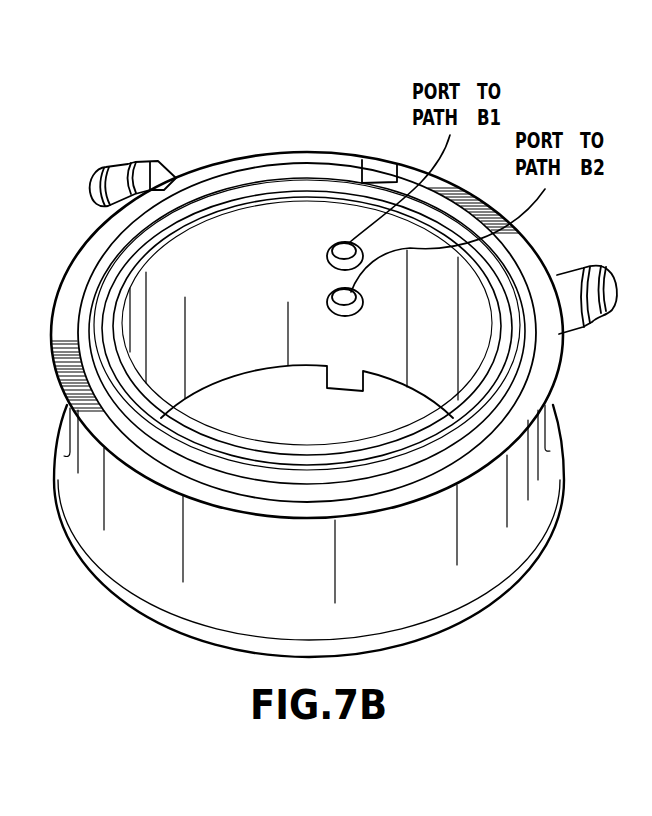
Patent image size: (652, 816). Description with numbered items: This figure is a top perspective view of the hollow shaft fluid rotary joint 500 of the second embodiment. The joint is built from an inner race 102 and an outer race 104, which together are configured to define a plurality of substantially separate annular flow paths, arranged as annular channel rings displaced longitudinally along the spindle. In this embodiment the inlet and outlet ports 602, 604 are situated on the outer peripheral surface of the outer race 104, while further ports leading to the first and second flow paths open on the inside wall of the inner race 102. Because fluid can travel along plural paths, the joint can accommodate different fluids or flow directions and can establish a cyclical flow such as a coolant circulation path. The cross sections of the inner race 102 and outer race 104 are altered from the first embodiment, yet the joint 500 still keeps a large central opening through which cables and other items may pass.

The hollow shaft fluid rotary joint 500 is at (352, 76).
The inner race 102 is at (253, 233).
The outer race 104 is at (193, 583).
The inlet and outlet port 602 is at (107, 162).
The inlet and outlet port 604 is at (598, 280).